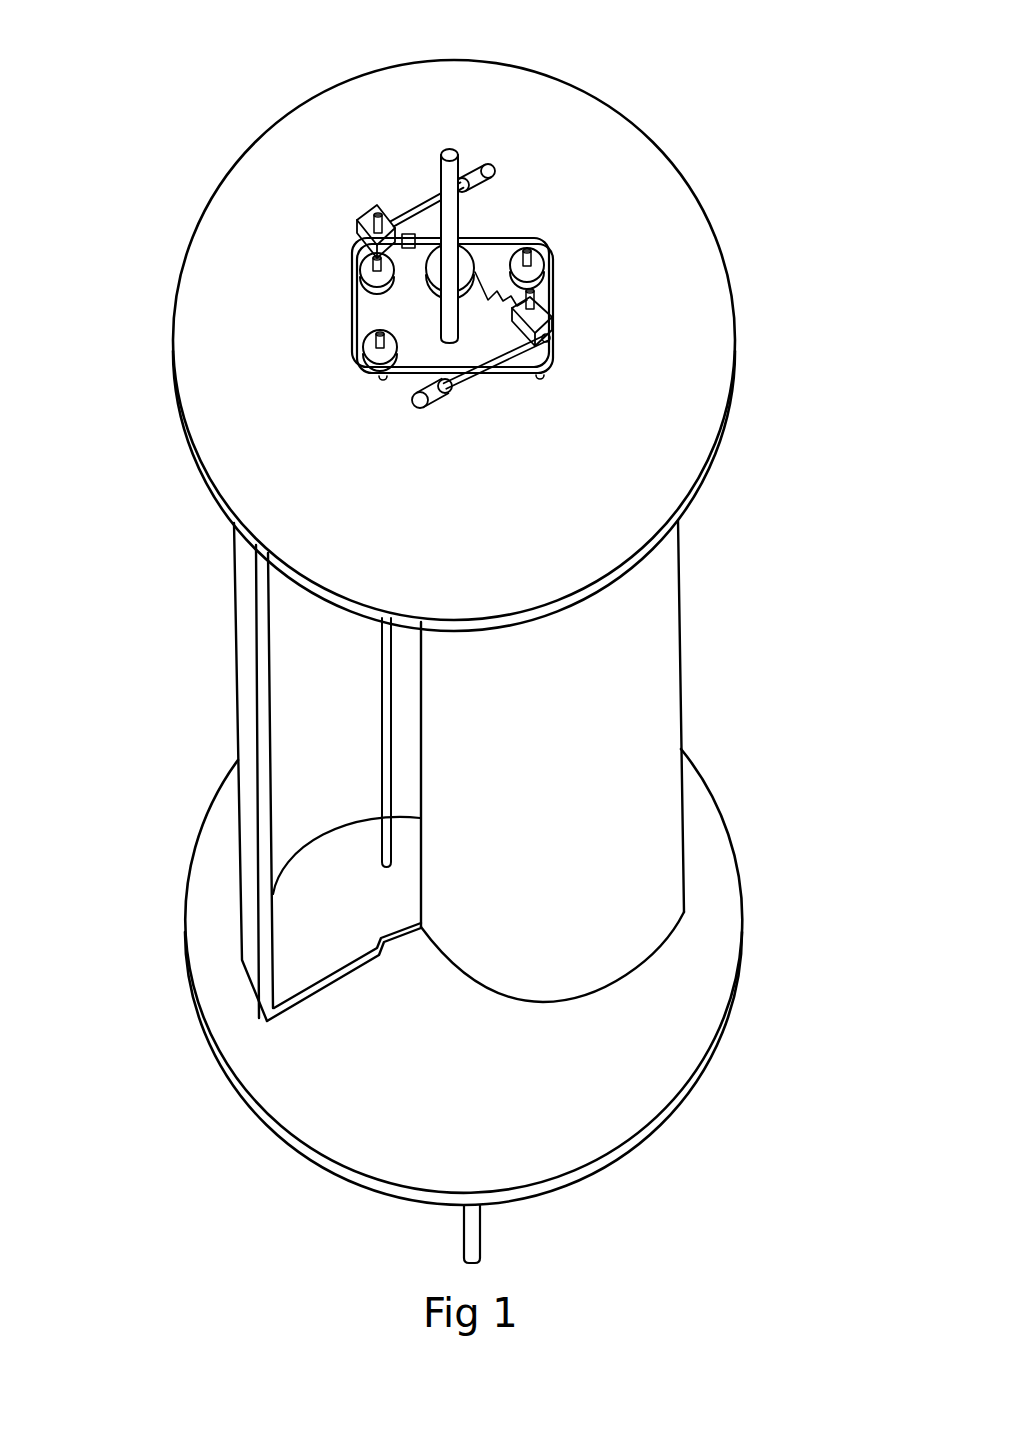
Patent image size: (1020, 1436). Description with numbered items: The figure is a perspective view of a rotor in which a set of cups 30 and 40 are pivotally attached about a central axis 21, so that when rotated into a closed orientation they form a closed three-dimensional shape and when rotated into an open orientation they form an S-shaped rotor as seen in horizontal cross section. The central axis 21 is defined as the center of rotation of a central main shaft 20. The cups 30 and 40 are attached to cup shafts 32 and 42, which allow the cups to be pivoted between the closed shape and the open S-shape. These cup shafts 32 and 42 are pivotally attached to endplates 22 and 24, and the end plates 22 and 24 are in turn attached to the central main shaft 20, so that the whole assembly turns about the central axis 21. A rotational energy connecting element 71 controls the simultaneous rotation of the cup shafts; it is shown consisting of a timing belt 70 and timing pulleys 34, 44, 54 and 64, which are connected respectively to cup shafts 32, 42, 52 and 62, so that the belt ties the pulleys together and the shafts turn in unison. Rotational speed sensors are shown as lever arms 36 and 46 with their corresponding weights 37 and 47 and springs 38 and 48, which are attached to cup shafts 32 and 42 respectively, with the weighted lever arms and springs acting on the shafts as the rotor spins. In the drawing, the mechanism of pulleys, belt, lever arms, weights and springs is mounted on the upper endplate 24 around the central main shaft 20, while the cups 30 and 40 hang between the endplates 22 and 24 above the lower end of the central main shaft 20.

The central main shaft 20 is at (462, 1228).
The central axis 21 is at (450, 122).
The endplate 22 is at (287, 1144).
The endplate 24 is at (723, 258).
The cup 30 is at (233, 633).
The cup shaft 32 is at (360, 222).
The timing pulley 34 is at (357, 270).
The lever arm 36 is at (373, 208).
The weight 37 is at (493, 165).
The spring 38 is at (412, 245).
The cup 40 is at (679, 628).
The cup shaft 42 is at (552, 307).
The timing pulley 44 is at (532, 347).
The lever arm 46 is at (553, 333).
The weight 47 is at (415, 410).
The spring 48 is at (484, 283).
The cup shaft 52 is at (360, 337).
The timing pulley 54 is at (358, 360).
The cup shaft 62 is at (545, 238).
The timing pulley 64 is at (542, 263).
The timing belt 70 is at (352, 300).
The rotational energy connecting element 71 is at (453, 244).